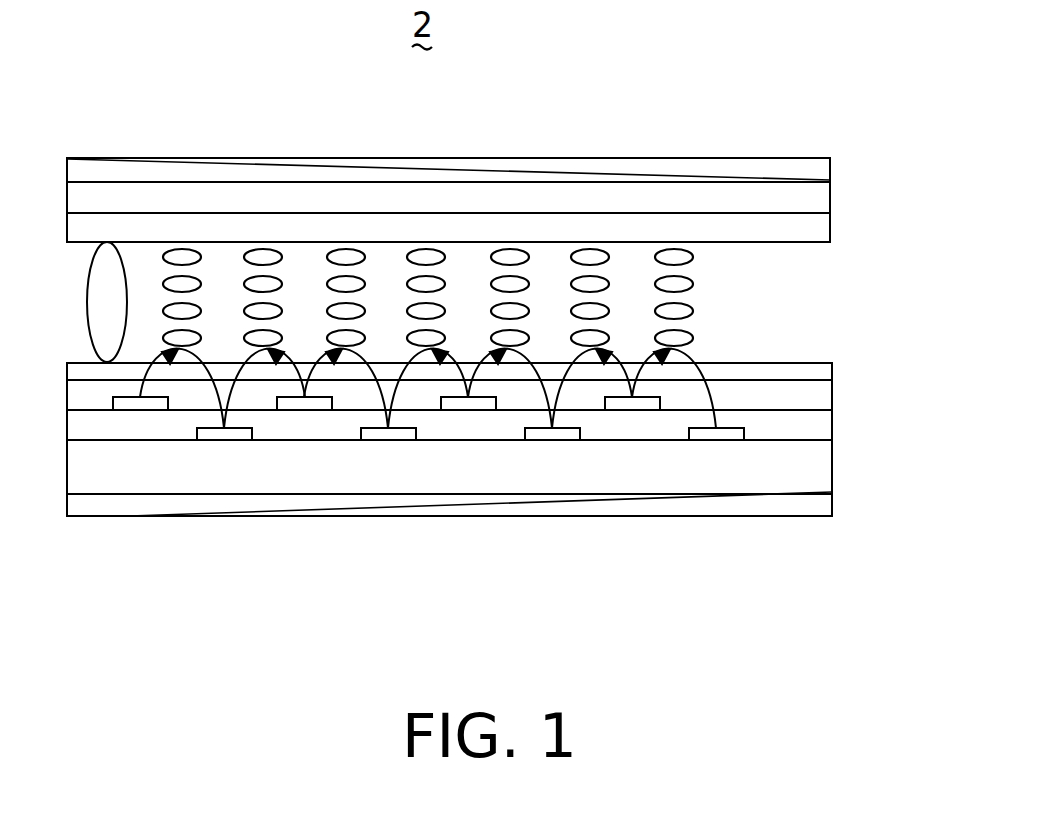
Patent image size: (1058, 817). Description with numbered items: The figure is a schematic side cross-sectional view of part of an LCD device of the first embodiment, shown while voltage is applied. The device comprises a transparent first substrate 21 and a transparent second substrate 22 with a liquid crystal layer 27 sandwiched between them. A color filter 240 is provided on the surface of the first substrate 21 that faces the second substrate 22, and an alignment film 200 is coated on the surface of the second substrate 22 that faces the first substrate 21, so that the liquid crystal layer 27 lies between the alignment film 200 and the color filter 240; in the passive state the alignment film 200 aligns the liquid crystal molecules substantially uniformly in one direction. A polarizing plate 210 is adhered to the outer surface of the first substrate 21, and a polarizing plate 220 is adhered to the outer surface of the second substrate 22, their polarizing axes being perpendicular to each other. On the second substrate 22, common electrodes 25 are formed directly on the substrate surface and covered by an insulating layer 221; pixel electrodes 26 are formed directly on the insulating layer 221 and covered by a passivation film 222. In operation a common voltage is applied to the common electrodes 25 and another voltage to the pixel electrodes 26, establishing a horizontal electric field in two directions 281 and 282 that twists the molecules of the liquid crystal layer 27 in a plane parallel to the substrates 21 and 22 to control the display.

The first substrate 21 is at (805, 200).
The polarizing plate 210 is at (788, 173).
The color filter 240 is at (818, 228).
The liquid crystal layer 27 is at (714, 292).
The second substrate 22 is at (822, 473).
The alignment film 200 is at (815, 372).
The passivation film 222 is at (812, 397).
The insulating layer 221 is at (813, 424).
The polarizing plate 220 is at (815, 507).
The pixel electrodes 26 is at (133, 403).
The common electrodes 25 is at (242, 432).
The electric field direction 281 is at (230, 388).
The electric field direction 282 is at (700, 392).